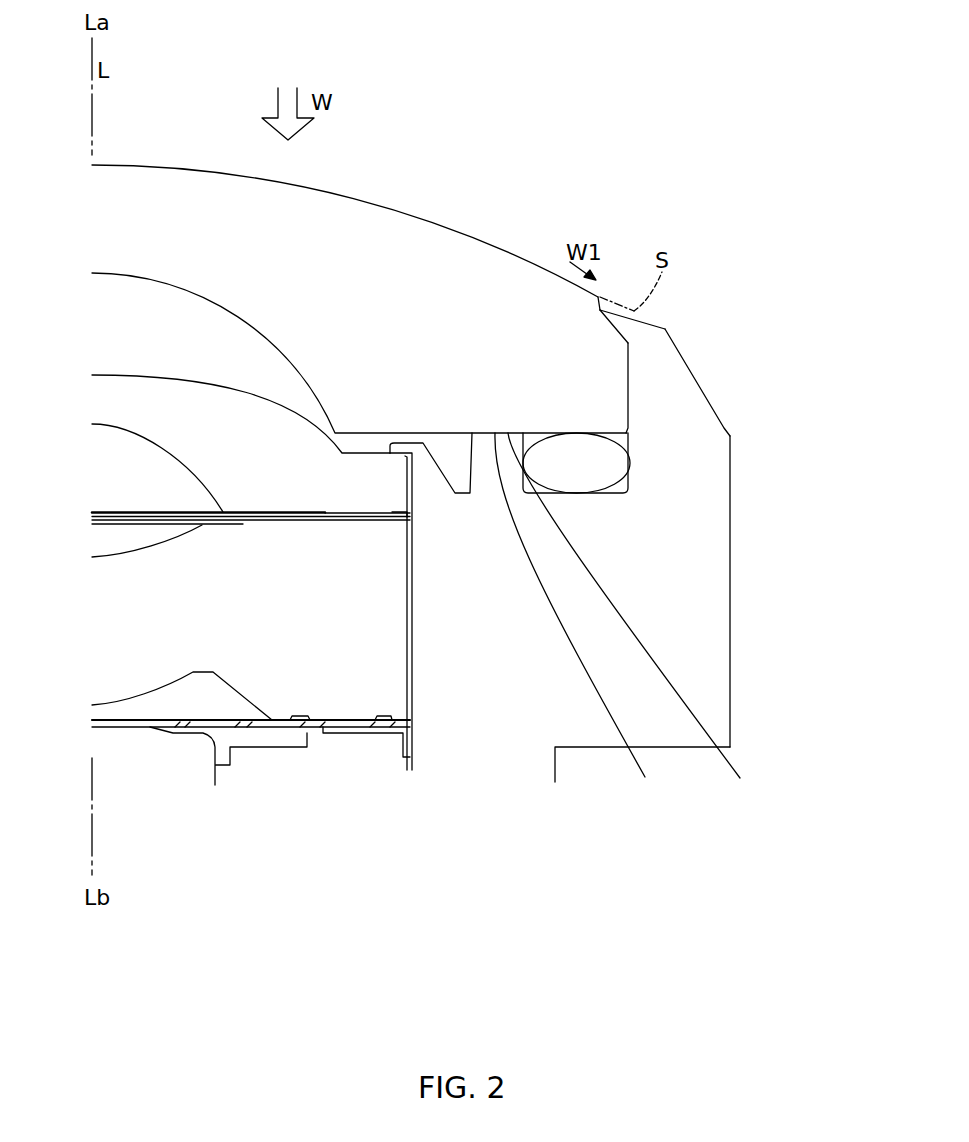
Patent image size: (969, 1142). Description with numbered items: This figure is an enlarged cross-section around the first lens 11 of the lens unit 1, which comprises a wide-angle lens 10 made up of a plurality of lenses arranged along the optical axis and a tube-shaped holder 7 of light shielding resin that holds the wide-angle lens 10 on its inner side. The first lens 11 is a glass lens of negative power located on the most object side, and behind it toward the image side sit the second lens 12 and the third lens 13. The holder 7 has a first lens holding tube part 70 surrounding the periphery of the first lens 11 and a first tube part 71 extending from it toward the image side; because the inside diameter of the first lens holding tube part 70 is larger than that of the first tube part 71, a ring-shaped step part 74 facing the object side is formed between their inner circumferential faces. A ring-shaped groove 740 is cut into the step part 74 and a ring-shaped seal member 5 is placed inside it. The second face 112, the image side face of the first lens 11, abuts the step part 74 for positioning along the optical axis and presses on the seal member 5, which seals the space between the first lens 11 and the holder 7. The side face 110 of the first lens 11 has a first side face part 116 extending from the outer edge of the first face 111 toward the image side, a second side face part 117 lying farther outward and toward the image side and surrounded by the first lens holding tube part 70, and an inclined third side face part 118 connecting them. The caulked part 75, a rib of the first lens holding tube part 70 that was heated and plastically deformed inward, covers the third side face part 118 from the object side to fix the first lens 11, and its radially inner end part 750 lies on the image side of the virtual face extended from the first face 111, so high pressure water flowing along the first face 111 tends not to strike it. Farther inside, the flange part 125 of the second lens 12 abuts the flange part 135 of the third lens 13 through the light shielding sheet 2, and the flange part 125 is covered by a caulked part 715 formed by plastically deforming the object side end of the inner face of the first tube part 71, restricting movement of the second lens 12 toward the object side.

The lens unit 1 is at (592, 120).
The light shielding sheet 2 is at (255, 619).
The seal member 5 is at (617, 467).
The holder 7 is at (602, 437).
The wide-angle lens 10 is at (198, 164).
The first lens 11 is at (345, 215).
The second lens 12 is at (127, 385).
The third lens 13 is at (112, 653).
The first lens holding tube part 70 is at (678, 395).
The first tube part 71 is at (703, 677).
The step part 74 is at (578, 620).
The caulked part 75 is at (622, 323).
The side face 110 is at (526, 350).
The first face 111 is at (508, 245).
The second face 112 is at (643, 433).
The first side face part 116 is at (598, 303).
The second side face part 117 is at (627, 360).
The third side face part 118 is at (608, 326).
The flange part 125 is at (358, 498).
The flange part 135 is at (383, 627).
The caulked part 715 is at (398, 450).
The groove 740 is at (610, 495).
The inner side end part 750 is at (597, 307).